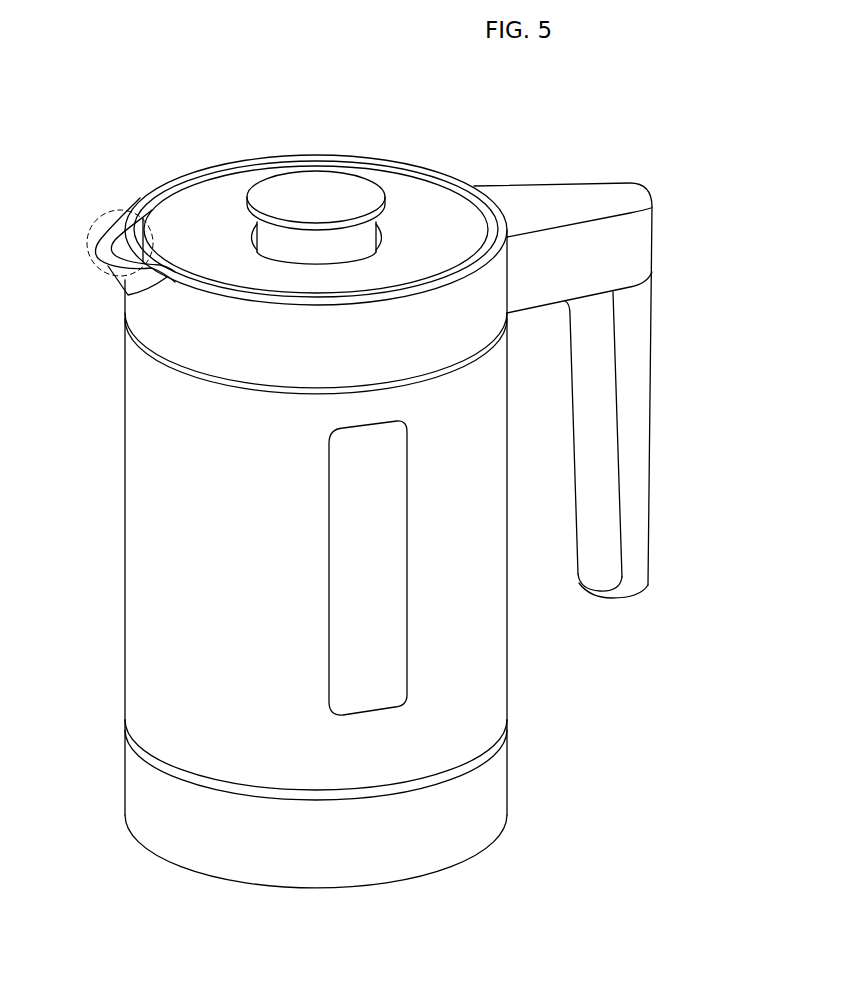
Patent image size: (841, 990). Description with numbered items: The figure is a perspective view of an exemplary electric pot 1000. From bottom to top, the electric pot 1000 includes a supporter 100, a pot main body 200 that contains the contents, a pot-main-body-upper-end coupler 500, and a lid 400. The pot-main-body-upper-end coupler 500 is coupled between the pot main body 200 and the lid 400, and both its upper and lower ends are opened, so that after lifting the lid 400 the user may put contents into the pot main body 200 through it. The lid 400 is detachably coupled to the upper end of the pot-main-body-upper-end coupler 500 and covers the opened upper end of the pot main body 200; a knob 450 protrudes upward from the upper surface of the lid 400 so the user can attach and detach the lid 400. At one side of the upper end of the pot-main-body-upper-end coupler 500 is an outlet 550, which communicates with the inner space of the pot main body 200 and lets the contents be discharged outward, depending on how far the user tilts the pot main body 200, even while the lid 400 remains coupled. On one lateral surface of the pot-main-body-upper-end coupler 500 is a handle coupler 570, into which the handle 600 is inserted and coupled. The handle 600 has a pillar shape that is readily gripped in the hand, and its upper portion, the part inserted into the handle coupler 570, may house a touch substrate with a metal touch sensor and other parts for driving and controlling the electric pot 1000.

The electric pot 1000 is at (103, 102).
The supporter 100 is at (503, 795).
The pot main body 200 is at (137, 492).
The lid 400 is at (230, 193).
The knob 450 is at (323, 180).
The pot-main-body-upper-end coupler 500 is at (392, 340).
The outlet 550 is at (103, 213).
The handle coupler 570 is at (578, 197).
The handle 600 is at (637, 412).